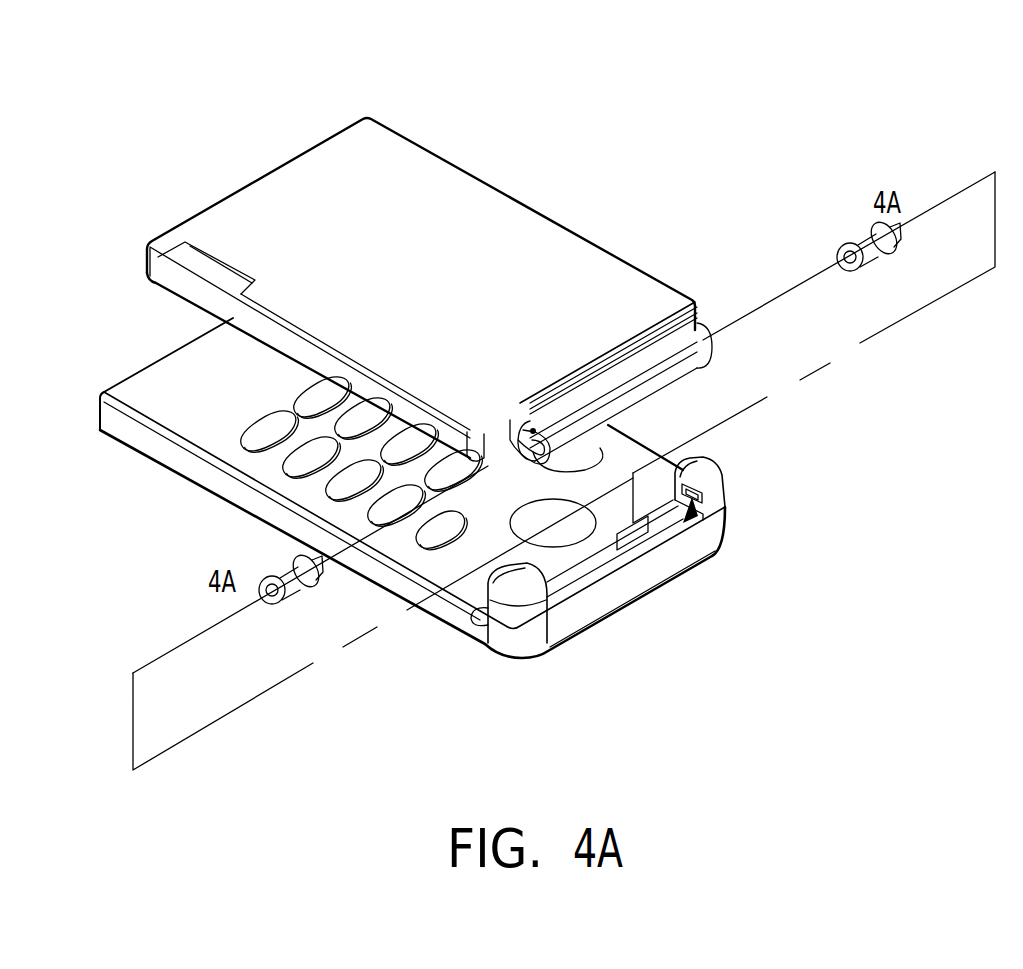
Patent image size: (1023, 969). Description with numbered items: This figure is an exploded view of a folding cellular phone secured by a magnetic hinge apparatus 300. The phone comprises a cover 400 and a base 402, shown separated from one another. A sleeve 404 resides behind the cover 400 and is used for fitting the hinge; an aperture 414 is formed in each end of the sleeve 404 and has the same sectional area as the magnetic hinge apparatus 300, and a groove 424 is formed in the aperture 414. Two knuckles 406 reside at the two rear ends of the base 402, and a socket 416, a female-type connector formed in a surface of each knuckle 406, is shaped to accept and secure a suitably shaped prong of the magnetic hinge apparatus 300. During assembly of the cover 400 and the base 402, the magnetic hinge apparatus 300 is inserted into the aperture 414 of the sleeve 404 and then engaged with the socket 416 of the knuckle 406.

The cover 400 is at (407, 183).
The base 402 is at (157, 400).
The sleeve 404 is at (704, 333).
The knuckle 406 is at (520, 587).
The aperture 414 is at (523, 437).
The socket 416 is at (690, 525).
The groove 424 is at (533, 425).
The magnetic hinge apparatus 300 is at (293, 597).